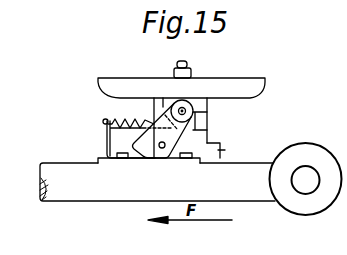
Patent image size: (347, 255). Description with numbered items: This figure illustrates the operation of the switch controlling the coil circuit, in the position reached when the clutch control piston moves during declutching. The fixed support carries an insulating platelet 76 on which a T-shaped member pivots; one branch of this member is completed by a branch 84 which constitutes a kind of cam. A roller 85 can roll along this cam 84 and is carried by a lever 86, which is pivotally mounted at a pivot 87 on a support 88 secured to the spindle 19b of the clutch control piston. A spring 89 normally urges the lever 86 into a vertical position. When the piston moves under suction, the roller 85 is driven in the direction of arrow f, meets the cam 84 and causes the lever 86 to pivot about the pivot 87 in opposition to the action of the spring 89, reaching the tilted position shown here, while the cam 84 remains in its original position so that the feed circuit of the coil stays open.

The spindle of the clutch control piston 19b is at (232, 184).
The branch 84 is at (224, 98).
The roller 85 is at (208, 112).
The lever 86 is at (208, 130).
The insulating platelet 76 is at (223, 152).
The pivot axle 87 is at (162, 148).
The support 88 is at (120, 141).
The spring 89 is at (160, 124).